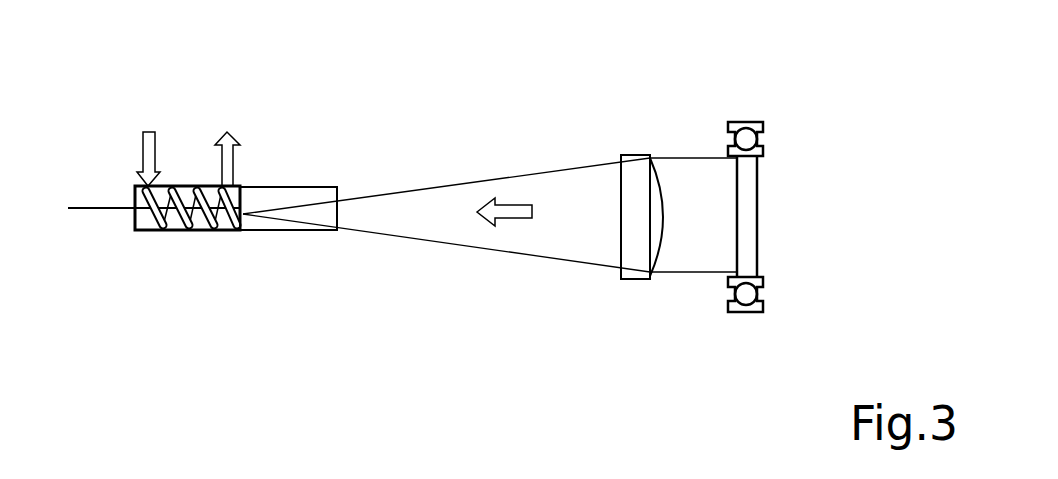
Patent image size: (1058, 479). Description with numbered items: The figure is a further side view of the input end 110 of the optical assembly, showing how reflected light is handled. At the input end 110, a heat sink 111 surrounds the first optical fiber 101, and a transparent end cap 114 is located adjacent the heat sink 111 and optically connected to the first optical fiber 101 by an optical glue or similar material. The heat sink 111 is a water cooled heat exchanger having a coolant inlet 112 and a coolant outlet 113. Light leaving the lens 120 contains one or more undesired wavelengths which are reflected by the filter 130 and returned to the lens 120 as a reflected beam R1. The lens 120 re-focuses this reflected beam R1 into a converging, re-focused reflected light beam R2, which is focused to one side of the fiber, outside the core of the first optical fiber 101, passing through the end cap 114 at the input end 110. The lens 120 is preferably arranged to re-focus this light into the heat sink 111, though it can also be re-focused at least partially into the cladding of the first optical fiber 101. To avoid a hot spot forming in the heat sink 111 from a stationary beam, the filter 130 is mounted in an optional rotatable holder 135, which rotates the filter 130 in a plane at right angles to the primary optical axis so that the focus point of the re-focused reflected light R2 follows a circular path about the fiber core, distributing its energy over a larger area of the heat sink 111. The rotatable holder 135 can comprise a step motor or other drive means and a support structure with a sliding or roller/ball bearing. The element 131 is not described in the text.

The first optical fiber 101 is at (95, 215).
The input end 110 is at (287, 259).
The heat sink 111 is at (112, 137).
The coolant inlet 112 is at (163, 126).
The coolant outlet 113 is at (237, 128).
The end cap 114 is at (302, 181).
The lens 120 is at (632, 280).
The filter 130 is at (753, 228).
The reflective surface 131 is at (737, 235).
The rotatable holder 135 is at (758, 122).
The reflected beam R1 is at (697, 158).
The re-focused reflected light beam R2 is at (497, 177).